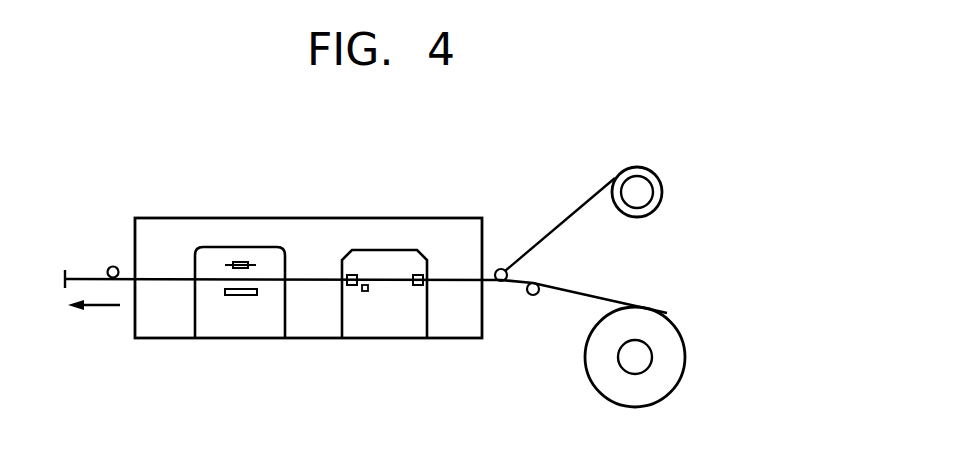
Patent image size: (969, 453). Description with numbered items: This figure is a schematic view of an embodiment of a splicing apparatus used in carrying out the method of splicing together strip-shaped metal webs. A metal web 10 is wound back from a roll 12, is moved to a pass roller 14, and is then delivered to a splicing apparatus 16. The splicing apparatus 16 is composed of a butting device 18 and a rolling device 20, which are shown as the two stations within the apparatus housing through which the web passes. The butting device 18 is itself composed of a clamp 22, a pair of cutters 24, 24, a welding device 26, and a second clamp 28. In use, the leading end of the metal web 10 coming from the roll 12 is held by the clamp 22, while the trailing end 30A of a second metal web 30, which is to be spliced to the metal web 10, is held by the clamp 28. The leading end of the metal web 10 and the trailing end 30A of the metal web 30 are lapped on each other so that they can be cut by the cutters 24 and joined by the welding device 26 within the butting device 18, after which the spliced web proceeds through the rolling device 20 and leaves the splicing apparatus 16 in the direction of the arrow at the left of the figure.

The metal web 10 is at (580, 295).
The roll 12 is at (670, 316).
The pass roller 14 is at (504, 268).
The splicing apparatus 16 is at (462, 216).
The butting device 18 is at (378, 240).
The rolling device 20 is at (243, 247).
The clamp 22 is at (419, 285).
The cutters 24 is at (399, 262).
The welding device 26 is at (363, 262).
The clamp 28 is at (352, 285).
The metal web 30 is at (83, 270).
The trailing end 30A is at (597, 188).